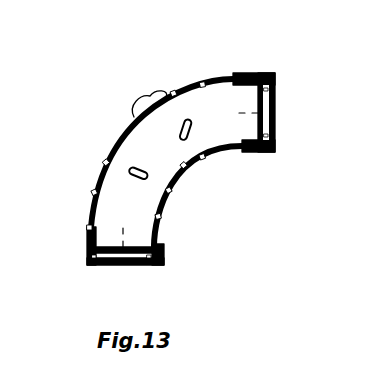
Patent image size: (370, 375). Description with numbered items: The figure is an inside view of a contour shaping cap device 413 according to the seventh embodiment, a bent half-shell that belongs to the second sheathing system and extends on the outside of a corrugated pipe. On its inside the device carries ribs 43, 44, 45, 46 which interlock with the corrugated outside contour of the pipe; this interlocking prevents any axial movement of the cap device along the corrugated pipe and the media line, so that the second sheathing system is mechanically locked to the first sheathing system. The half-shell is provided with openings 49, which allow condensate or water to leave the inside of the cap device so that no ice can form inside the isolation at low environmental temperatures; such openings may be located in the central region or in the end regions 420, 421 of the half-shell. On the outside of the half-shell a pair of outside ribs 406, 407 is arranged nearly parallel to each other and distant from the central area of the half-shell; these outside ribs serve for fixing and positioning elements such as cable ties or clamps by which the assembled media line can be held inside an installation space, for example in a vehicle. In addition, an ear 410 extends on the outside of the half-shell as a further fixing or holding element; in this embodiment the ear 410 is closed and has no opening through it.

The rib 43 is at (100, 265).
The rib 44 is at (107, 251).
The rib 45 is at (260, 76).
The rib 46 is at (277, 97).
The opening 49 is at (187, 117).
The outside rib 406 is at (94, 193).
The outside rib 407 is at (102, 163).
The ear 410 is at (143, 101).
The contour shaping cap device 413 is at (193, 168).
The end region 420 is at (275, 115).
The end region 421 is at (133, 265).